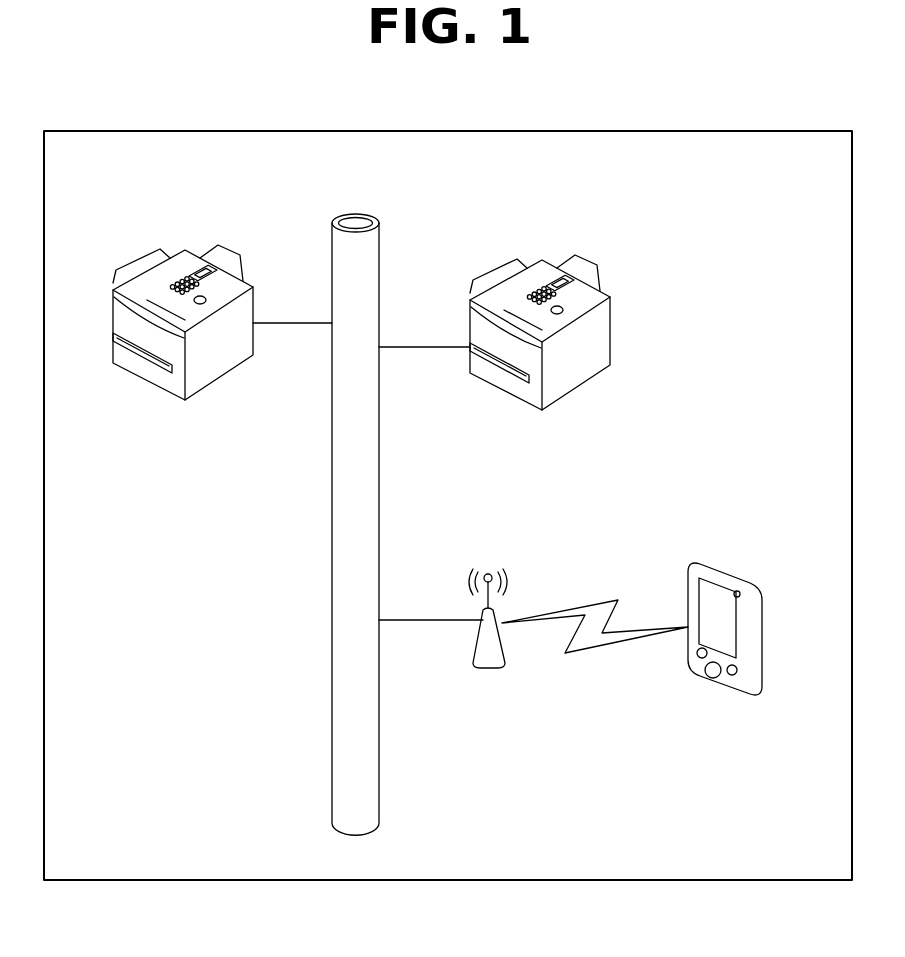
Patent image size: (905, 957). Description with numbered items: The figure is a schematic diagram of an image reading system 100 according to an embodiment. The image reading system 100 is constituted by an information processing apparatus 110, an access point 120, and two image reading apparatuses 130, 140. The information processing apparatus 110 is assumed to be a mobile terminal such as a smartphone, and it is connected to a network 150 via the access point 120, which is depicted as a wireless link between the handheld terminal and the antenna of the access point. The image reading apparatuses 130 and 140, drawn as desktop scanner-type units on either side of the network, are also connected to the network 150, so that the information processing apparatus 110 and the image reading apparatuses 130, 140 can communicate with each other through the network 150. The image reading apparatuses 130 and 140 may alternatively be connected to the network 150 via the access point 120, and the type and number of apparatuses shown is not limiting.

The image reading system 100 is at (795, 131).
The information processing apparatus 110 is at (745, 572).
The access point 120 is at (503, 572).
The image reading apparatus 130 is at (178, 252).
The image reading apparatus 140 is at (535, 262).
The network 150 is at (375, 216).